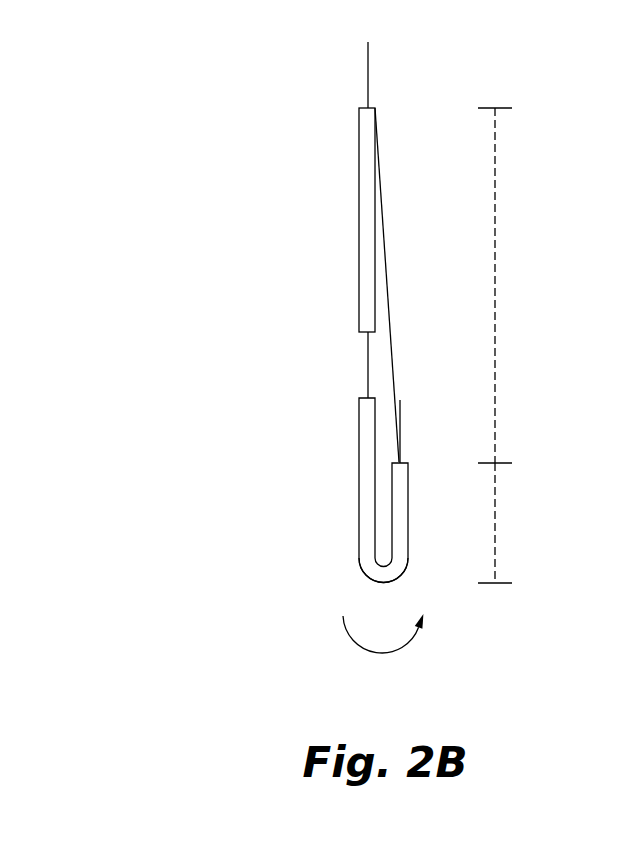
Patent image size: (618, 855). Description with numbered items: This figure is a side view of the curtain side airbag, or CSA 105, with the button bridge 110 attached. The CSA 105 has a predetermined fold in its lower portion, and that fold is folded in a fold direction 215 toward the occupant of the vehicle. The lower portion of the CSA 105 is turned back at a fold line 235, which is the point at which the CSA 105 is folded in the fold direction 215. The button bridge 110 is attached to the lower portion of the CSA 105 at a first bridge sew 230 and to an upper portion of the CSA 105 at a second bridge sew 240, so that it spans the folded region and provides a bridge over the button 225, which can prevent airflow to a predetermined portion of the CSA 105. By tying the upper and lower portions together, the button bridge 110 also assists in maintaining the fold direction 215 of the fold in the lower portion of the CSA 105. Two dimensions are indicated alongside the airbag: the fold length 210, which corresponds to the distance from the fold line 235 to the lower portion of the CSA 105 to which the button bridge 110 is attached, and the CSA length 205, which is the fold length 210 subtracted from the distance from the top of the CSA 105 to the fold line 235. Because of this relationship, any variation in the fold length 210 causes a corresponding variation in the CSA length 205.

The CSA 105 is at (359, 215).
The button bridge 110 is at (395, 374).
The CSA length 205 is at (495, 232).
The fold length 210 is at (495, 535).
The fold direction 215 is at (383, 651).
The button 225 is at (368, 374).
The first bridge sew 230 is at (408, 462).
The fold line 235 is at (369, 578).
The second bridge sew 240 is at (376, 108).